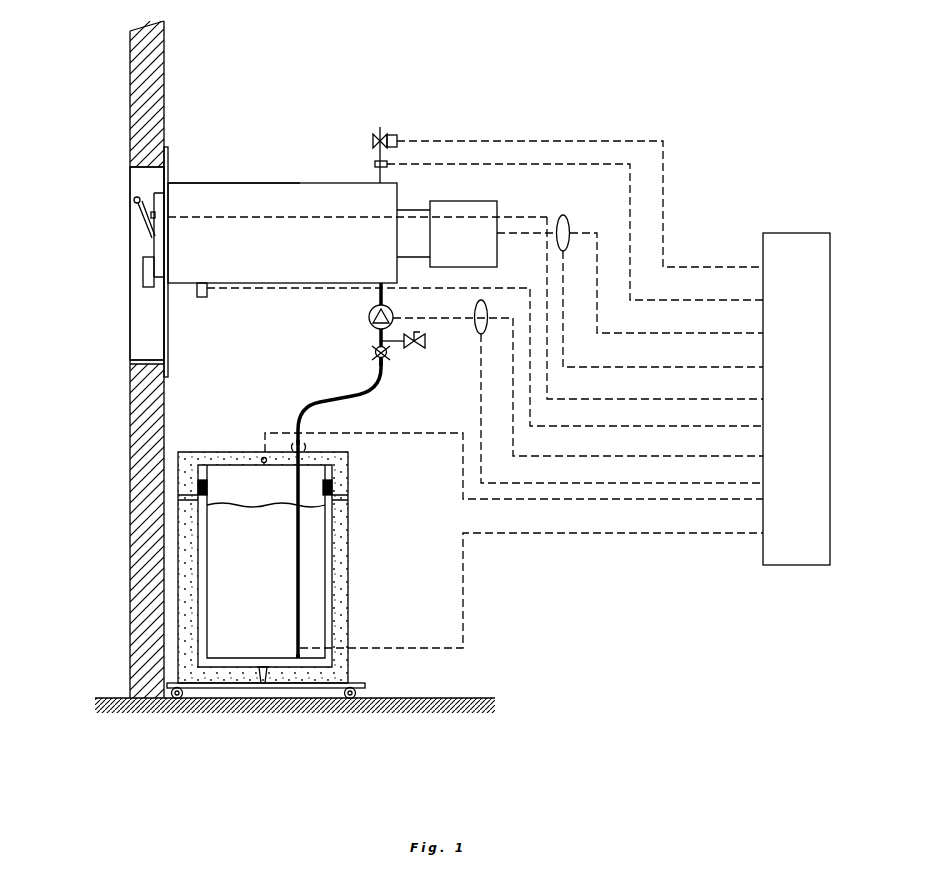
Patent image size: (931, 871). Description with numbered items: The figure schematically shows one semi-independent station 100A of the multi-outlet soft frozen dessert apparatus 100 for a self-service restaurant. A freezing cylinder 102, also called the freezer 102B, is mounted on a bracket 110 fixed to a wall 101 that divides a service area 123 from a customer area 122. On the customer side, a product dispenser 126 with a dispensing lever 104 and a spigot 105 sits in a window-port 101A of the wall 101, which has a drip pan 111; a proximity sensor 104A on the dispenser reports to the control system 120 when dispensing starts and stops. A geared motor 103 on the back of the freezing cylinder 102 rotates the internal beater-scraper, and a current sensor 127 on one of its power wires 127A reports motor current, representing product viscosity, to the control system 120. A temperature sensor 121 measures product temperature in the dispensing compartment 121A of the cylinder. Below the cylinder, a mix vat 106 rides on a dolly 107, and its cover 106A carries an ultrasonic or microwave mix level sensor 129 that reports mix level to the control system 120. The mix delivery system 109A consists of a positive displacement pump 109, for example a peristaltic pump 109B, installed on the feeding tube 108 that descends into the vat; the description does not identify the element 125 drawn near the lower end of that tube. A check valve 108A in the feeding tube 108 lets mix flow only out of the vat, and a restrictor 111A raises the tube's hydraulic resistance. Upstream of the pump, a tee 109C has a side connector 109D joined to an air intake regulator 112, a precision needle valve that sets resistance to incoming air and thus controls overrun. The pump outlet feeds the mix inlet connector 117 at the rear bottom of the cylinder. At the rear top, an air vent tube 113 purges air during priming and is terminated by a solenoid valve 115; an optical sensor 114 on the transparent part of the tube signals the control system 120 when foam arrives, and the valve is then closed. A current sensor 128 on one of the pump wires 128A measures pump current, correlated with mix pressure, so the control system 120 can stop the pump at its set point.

The multi-outlet soft frozen dessert apparatus 100 is at (115, 370).
The semi-independent station 100A is at (466, 384).
The wall 101 is at (130, 598).
The window-port 101A is at (130, 334).
The freezing cylinder 102 is at (298, 202).
The freezer 102B is at (222, 192).
The geared motor 103 is at (457, 217).
The dispensing lever 104 is at (152, 216).
The proximity sensor 104A is at (130, 196).
The spigot 105 is at (146, 276).
The mix vat 106 is at (316, 586).
The cover 106A is at (340, 483).
The dolly 107 is at (352, 686).
The feeding tube 108 is at (363, 401).
The check valve 108A is at (385, 362).
The positive displacement pump 109 is at (352, 319).
The mix delivery system 109A is at (514, 383).
The peristaltic pump 109B is at (372, 312).
The tee 109C is at (375, 345).
The side connector 109D is at (393, 346).
The bracket 110 is at (170, 172).
The drip pan 111 is at (140, 365).
The restrictor 111A is at (304, 447).
The air intake regulator 112 is at (427, 344).
The air vent tube 113 is at (379, 176).
The optical sensor 114 is at (375, 164).
The solenoid valve 115 is at (374, 141).
The mix inlet connector 117 is at (385, 297).
The control system 120 is at (820, 432).
The temperature sensor 121 is at (206, 291).
The dispensing compartment 121A is at (578, 540).
The customer area 122 is at (62, 667).
The service area 123 is at (458, 675).
The level sensor 125 is at (301, 648).
The product dispenser 126 is at (152, 193).
The current sensor 127 is at (572, 231).
The power wires 127A is at (521, 233).
The current sensor 128 is at (488, 313).
The wires 128A is at (438, 319).
The ultrasonic or microwave mix level sensor 129 is at (263, 458).